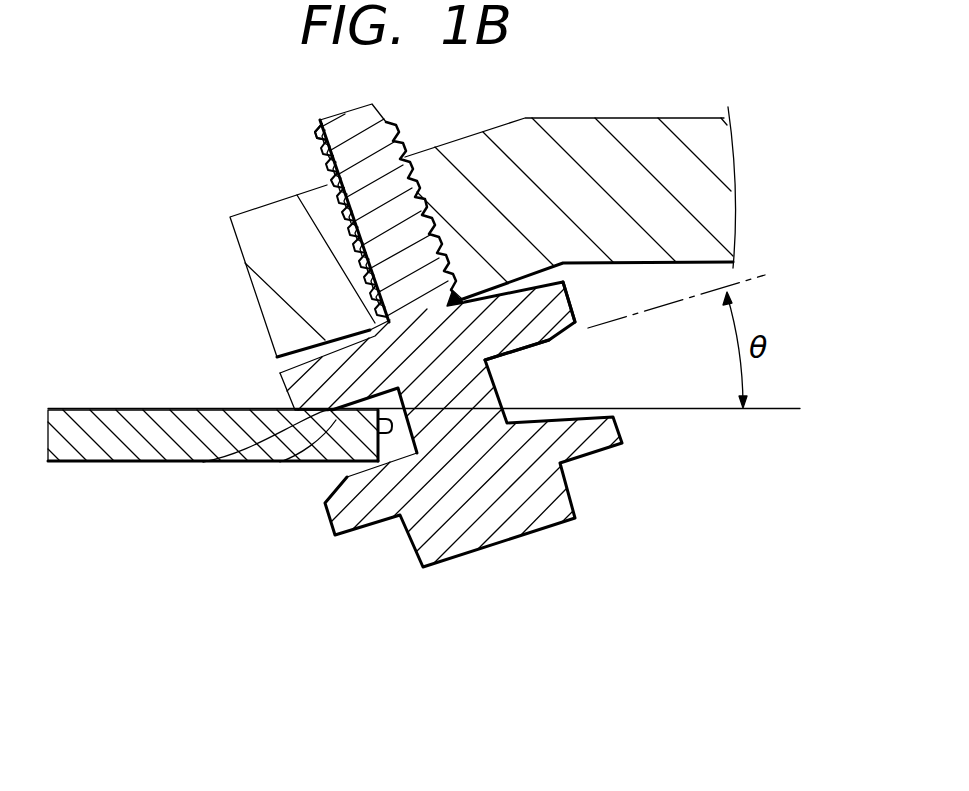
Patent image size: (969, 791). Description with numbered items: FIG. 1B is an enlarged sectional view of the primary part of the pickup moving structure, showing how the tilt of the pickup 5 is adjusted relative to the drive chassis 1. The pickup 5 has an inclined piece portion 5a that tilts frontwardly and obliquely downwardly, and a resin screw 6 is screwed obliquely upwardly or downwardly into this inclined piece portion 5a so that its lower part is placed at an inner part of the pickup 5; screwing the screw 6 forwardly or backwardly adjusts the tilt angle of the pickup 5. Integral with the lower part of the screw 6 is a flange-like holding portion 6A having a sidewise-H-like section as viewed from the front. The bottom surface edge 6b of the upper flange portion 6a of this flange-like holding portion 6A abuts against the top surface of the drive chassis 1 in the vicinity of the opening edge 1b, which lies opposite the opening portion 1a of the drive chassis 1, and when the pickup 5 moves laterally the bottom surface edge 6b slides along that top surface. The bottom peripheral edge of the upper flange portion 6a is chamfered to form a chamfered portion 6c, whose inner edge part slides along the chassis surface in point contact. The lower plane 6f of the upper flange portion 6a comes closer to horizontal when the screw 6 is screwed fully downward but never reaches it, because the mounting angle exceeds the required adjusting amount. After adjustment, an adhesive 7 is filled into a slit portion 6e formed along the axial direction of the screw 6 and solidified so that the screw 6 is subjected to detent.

The drive chassis 1 is at (150, 410).
The opening portion 1a is at (392, 447).
The opening edge 1b is at (345, 455).
The pickup 5 is at (607, 118).
The inclined piece portion 5a is at (270, 213).
The screw 6 is at (380, 126).
The flange-like holding portion 6A is at (595, 453).
The upper flange portion 6a is at (303, 388).
The bottom surface edge 6b is at (280, 462).
The chamfered portion 6c is at (203, 462).
The slit portion 6e is at (316, 130).
The lower plane 6f is at (511, 355).
The adhesive 7 is at (318, 166).